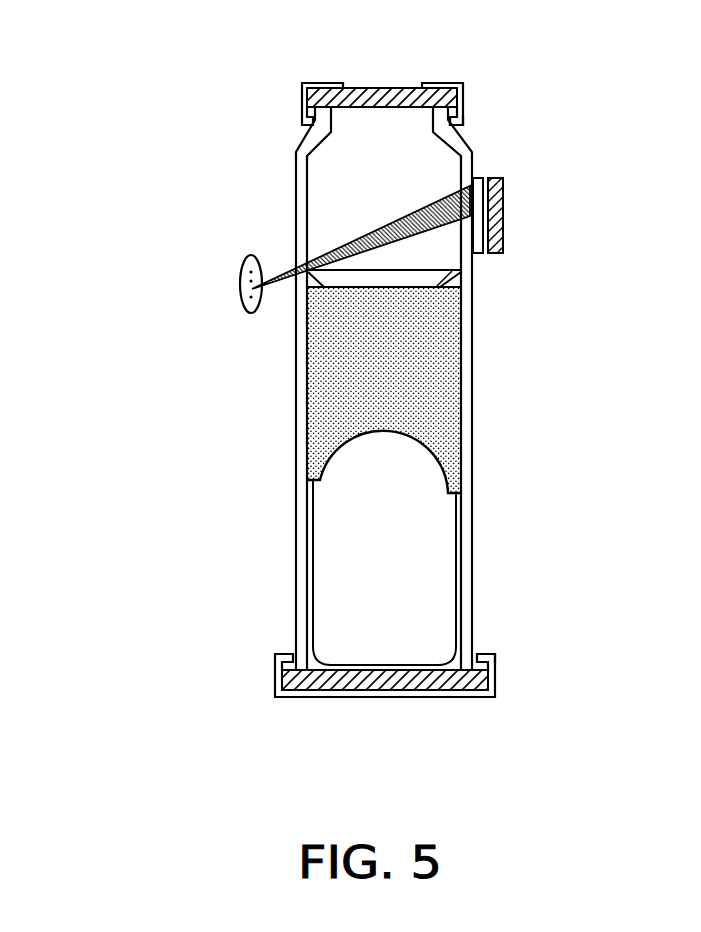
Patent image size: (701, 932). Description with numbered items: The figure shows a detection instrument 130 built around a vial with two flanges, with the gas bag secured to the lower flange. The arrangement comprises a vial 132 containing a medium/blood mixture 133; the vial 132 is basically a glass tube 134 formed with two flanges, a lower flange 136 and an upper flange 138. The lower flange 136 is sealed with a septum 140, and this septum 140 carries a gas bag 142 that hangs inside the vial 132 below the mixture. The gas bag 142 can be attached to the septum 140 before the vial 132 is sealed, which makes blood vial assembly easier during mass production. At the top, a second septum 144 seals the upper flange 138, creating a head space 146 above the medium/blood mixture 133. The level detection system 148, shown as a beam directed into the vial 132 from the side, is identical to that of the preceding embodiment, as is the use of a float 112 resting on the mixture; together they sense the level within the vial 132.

The detection instrument 130 is at (196, 192).
The septum 144 is at (370, 88).
The upper flange 138 is at (449, 125).
The head space 146 is at (318, 162).
The vial 132 is at (280, 430).
The glass tube 134 is at (468, 372).
The level detection system 148 is at (378, 208).
The float 112 is at (440, 272).
The medium/blood mixture 133 is at (325, 372).
The gas bag 142 is at (330, 562).
The septum 140 is at (367, 698).
The lower flange 136 is at (480, 657).